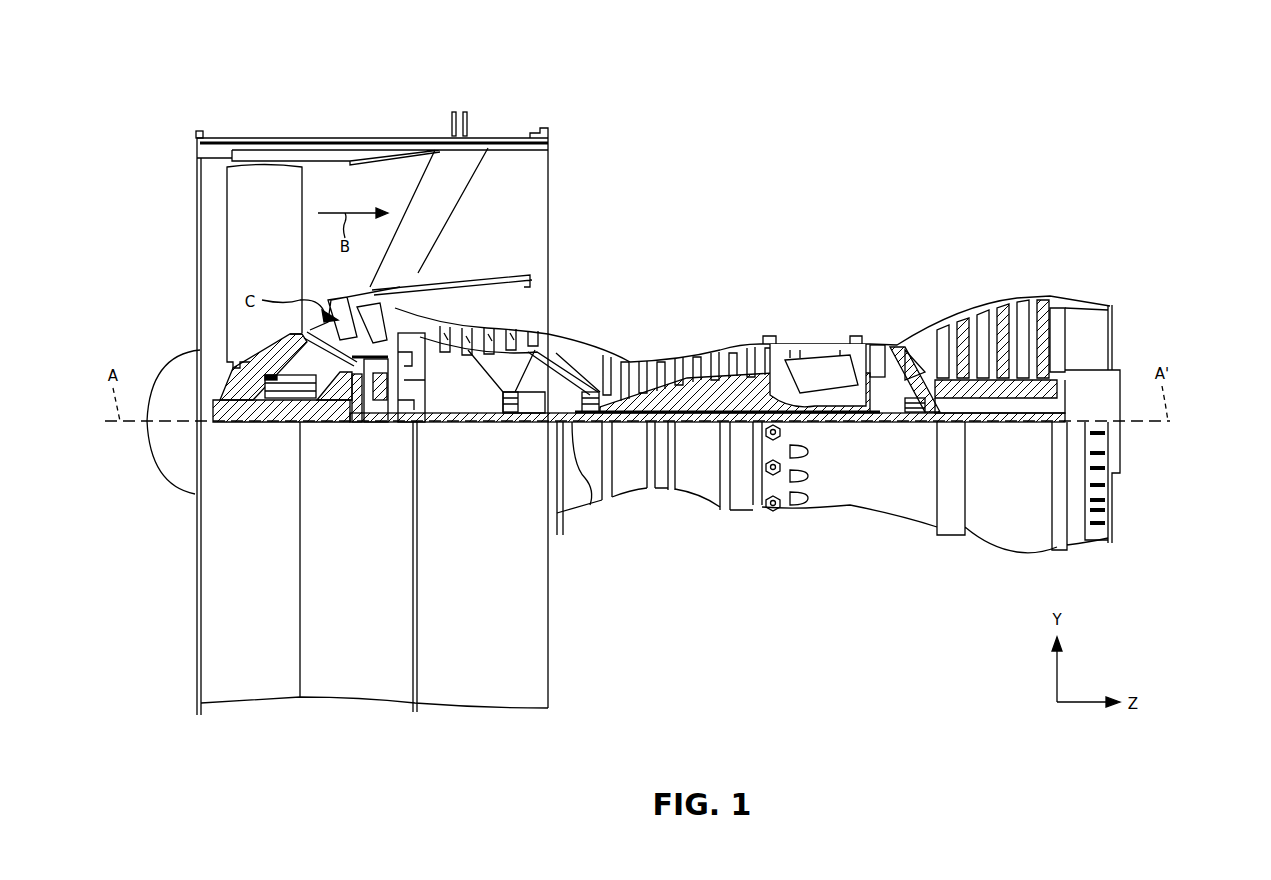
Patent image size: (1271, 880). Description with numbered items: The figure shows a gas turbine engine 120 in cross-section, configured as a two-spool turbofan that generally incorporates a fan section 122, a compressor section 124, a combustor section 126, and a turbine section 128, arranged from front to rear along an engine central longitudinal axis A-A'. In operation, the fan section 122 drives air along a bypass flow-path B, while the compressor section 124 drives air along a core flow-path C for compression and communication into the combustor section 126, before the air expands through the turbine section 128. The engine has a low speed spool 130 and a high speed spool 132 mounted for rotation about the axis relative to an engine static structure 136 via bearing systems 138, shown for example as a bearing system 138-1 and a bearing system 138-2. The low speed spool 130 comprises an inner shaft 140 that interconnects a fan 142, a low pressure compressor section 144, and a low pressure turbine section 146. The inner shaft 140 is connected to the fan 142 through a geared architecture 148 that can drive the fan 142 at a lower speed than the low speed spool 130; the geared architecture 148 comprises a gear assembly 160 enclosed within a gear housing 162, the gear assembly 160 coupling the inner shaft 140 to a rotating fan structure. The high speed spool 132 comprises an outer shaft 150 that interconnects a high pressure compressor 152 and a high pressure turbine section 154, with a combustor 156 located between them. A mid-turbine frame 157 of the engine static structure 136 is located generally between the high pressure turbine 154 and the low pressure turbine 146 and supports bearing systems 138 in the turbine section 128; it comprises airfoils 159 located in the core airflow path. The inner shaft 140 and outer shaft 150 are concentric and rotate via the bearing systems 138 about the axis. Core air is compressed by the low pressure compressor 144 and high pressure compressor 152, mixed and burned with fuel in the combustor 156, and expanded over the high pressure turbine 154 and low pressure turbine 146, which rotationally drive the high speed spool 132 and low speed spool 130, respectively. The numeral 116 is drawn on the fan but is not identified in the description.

The fan 116 is at (355, 684).
The gas turbine engine 120 is at (666, 152).
The fan section 122 is at (412, 123).
The compressor section 124 is at (420, 244).
The combustor section 126 is at (760, 244).
The turbine section 128 is at (1058, 244).
The low speed spool 130 is at (705, 424).
The high speed spool 132 is at (740, 395).
The engine static structure 136 is at (740, 495).
The bearing system 138 is at (915, 422).
The bearing system 138-1 is at (275, 402).
The bearing system 138-2 is at (508, 412).
The inner shaft 140 is at (590, 480).
The fan 142 is at (272, 253).
The low pressure compressor section 144 is at (487, 332).
The low pressure turbine section 146 is at (995, 320).
The geared architecture 148 is at (383, 428).
The outer shaft 150 is at (812, 407).
The high pressure compressor 152 is at (680, 370).
The high pressure turbine section 154 is at (875, 345).
The combustor 156 is at (808, 365).
The mid-turbine frame 157 is at (905, 350).
The airfoils 159 is at (915, 362).
The gear assembly 160 is at (382, 413).
The gear housing 162 is at (387, 372).